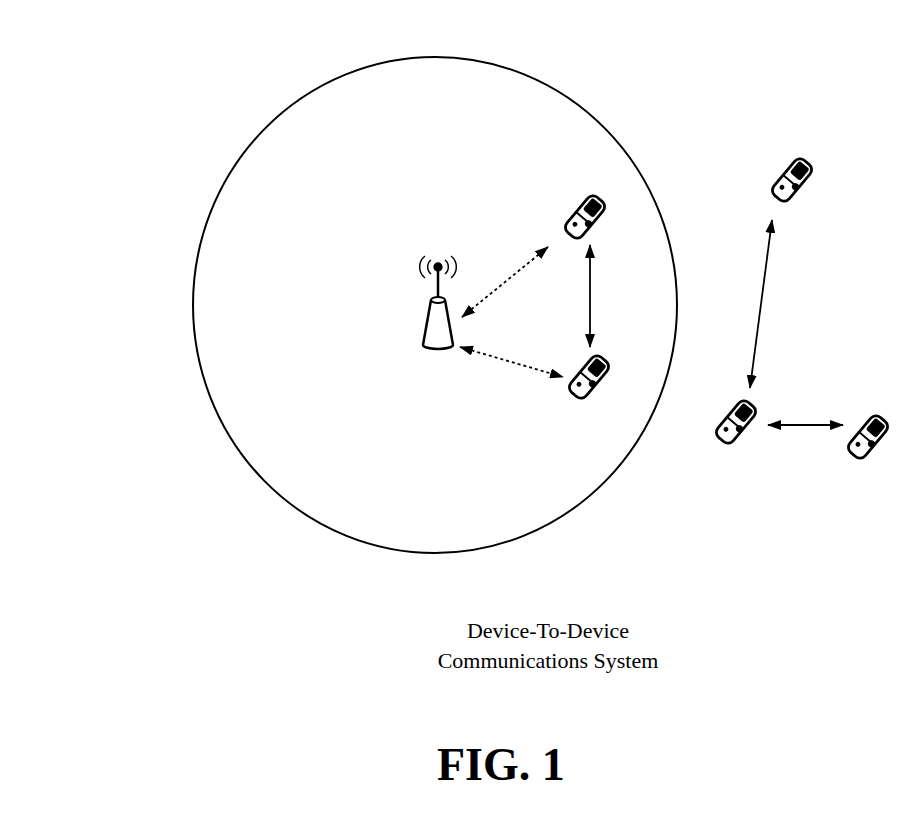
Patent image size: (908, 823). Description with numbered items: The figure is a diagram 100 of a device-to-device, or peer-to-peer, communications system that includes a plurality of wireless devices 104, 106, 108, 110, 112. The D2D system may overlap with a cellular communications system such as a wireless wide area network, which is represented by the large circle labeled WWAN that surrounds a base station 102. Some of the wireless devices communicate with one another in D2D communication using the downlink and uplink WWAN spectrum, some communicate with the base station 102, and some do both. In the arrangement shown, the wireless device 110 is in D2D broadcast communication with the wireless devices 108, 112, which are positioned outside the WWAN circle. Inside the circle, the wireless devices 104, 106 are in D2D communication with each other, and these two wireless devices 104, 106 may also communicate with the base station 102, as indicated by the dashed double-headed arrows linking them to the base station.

The diagram 100 is at (97, 61).
The base station 102 is at (440, 246).
The wireless device 104 is at (590, 196).
The wireless device 106 is at (570, 401).
The wireless device 108 is at (808, 153).
The wireless device 110 is at (725, 448).
The wireless device 112 is at (855, 460).